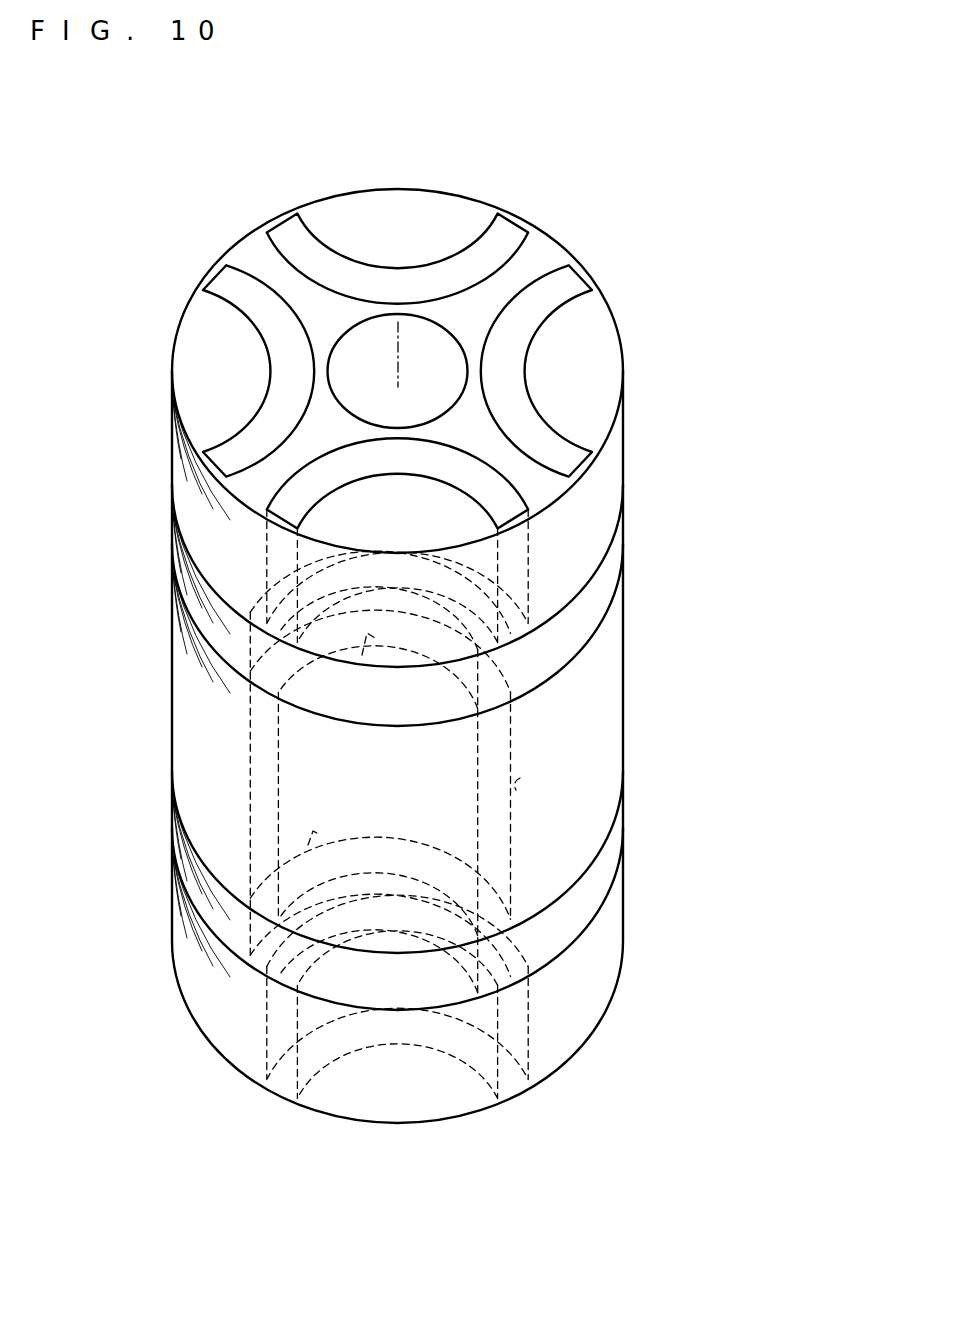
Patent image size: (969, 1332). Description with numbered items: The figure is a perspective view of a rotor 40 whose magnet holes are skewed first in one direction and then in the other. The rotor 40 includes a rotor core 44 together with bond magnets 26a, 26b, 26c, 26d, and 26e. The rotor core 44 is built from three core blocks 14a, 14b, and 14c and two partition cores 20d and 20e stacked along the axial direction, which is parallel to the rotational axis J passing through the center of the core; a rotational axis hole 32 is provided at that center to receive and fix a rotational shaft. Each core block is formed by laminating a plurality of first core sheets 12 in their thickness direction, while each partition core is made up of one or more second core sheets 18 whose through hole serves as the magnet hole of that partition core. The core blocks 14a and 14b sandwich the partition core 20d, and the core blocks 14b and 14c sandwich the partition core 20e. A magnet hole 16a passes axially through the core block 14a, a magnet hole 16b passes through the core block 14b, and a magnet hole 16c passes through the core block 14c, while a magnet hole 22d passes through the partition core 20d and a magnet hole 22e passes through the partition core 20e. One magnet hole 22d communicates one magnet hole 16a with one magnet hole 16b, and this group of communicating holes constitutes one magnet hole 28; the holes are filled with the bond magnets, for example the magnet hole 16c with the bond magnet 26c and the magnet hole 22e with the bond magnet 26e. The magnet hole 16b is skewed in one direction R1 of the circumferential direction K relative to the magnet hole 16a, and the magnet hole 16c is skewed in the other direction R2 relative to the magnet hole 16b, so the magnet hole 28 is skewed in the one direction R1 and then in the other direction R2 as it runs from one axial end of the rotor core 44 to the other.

The rotor 40 is at (180, 153).
The rotor core 44 is at (152, 273).
The core block 14a is at (643, 456).
The core block 14b is at (148, 702).
The core block 14c is at (642, 922).
The partition core 20d is at (641, 525).
The partition core 20e is at (148, 817).
The second core sheet 18 is at (185, 562).
The first core sheet 12 is at (228, 680).
The bond magnet 26a is at (537, 426).
The bond magnet 26b is at (520, 740).
The bond magnet 26c is at (516, 1045).
The bond magnet 26d is at (515, 660).
The bond magnet 26e is at (518, 960).
The magnet hole 16a is at (540, 311).
The magnet hole 16b is at (520, 778).
The magnet hole 16c is at (366, 1044).
The rotational axis hole 32 is at (390, 326).
The magnet hole 28 is at (440, 1058).
The magnet hole 22d is at (368, 655).
The magnet hole 22e is at (312, 845).
The rotational axis J is at (398, 335).
The circumferential direction K is at (252, 202).
The one direction R1 is at (130, 1000).
The other direction R2 is at (676, 1005).